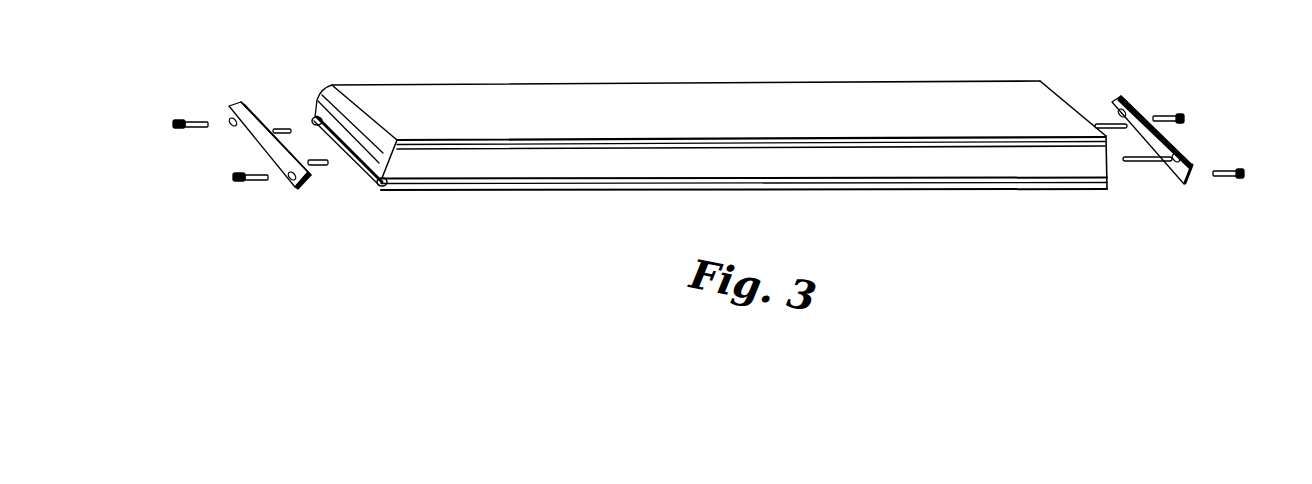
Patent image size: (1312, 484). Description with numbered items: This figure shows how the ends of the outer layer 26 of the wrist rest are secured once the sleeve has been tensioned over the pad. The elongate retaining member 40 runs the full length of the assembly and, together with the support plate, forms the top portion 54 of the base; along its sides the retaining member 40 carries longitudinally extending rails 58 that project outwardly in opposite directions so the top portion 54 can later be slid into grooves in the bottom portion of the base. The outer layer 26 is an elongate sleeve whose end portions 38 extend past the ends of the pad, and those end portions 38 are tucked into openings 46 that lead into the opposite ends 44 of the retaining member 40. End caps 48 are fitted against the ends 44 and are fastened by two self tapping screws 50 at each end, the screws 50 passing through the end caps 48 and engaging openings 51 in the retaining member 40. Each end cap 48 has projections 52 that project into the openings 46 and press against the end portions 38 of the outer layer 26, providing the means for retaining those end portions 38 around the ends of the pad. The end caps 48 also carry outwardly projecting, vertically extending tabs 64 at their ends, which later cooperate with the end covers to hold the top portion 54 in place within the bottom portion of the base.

The outer layer 26 is at (832, 118).
The end portions 38 is at (376, 133).
The retaining member 40 is at (355, 184).
The opposite ends 44 is at (320, 128).
The openings 46 is at (354, 128).
The end caps 48 is at (250, 133).
The self tapping screws 50 is at (249, 167).
The openings 51 is at (317, 116).
The projections 52 is at (326, 160).
The top portion 54 is at (772, 80).
The rails 58 is at (745, 191).
The tabs 64 is at (226, 117).